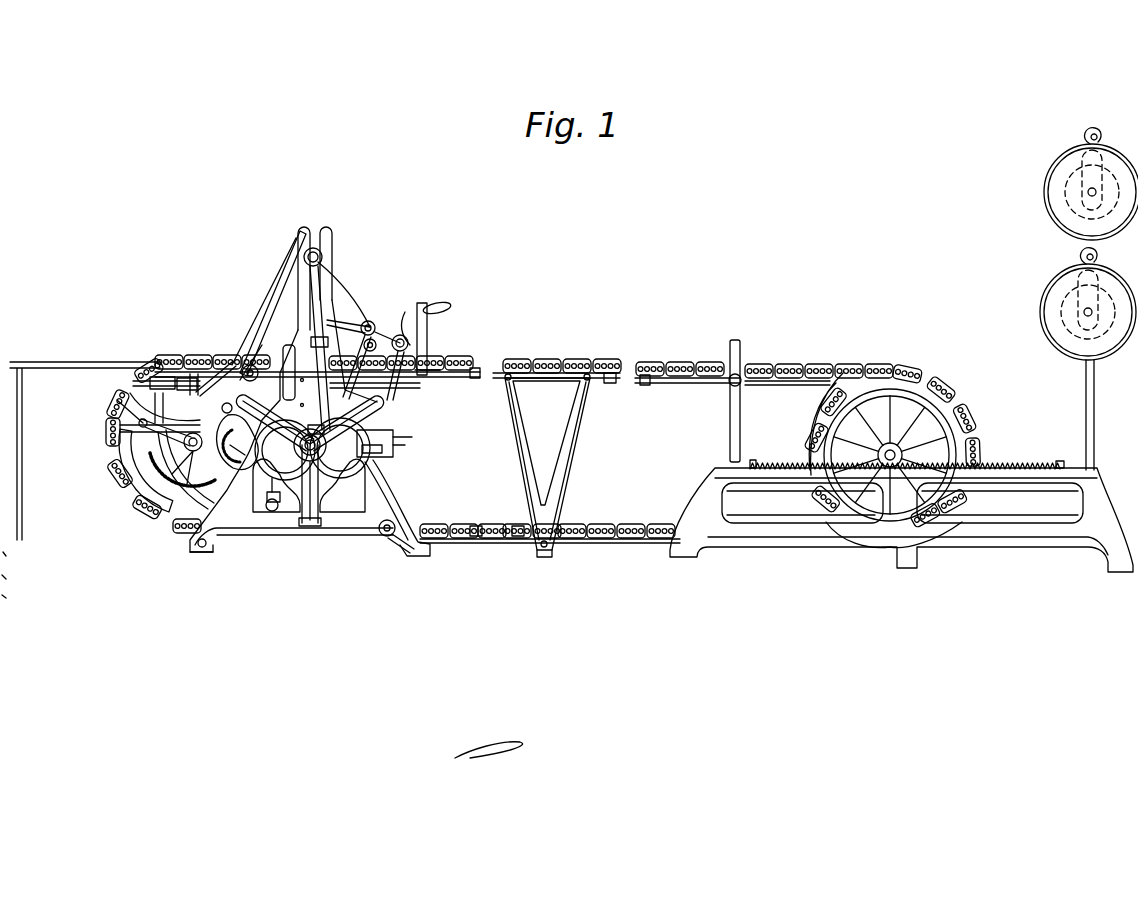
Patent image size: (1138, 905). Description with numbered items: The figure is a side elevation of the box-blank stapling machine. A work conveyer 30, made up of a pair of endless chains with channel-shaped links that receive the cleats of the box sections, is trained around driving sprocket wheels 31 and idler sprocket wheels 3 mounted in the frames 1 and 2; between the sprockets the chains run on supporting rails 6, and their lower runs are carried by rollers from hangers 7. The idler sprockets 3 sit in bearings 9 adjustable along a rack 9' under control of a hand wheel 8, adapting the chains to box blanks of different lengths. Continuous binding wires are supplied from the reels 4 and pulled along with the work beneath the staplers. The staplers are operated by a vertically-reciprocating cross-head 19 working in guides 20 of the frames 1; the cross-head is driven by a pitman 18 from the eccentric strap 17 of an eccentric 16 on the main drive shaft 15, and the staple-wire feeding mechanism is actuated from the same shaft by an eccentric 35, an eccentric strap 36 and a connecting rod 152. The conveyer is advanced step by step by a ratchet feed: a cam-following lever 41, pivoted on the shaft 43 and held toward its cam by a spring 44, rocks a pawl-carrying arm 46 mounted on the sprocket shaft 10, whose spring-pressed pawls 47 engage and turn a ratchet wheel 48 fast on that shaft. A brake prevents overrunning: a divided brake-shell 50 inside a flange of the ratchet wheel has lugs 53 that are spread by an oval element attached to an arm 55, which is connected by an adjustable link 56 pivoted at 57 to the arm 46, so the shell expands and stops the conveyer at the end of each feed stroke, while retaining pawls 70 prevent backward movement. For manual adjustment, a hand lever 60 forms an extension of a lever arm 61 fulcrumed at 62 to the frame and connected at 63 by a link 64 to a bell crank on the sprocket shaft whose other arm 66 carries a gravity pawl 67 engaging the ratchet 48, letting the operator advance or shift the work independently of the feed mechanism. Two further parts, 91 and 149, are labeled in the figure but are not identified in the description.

The frame 1 is at (320, 300).
The frame 2 is at (1030, 540).
The sprocket wheel 3 is at (838, 420).
The reel 4 is at (1046, 195).
The supporting rail 6 is at (480, 372).
The hanger 7 is at (572, 455).
The hand wheel 8 is at (905, 420).
The bearing 9 is at (874, 534).
The rack 9' is at (907, 424).
The sprocket shaft 10 is at (205, 490).
The main drive shaft 15 is at (340, 470).
The eccentric 16 is at (395, 438).
The eccentric strap 17 is at (385, 456).
The pitman 18 is at (335, 320).
The cross-head 19 is at (322, 264).
The guide 20 is at (302, 232).
The work conveyer 30 is at (592, 376).
The sprocket wheel 31 is at (140, 512).
The eccentric 35 is at (332, 480).
The eccentric strap 36 is at (305, 475).
The cam-following lever 41 is at (275, 512).
The shaft 43 is at (262, 500).
The spring 44 is at (283, 392).
The pawl-carrying arm 46 is at (200, 362).
The spring-pressed pawl 47 is at (165, 366).
The ratchet wheel 48 is at (185, 495).
The divided brake-shell 50 is at (157, 492).
The lug 53 is at (112, 422).
The arm 55 is at (155, 392).
The adjustable link 56 is at (140, 370).
The pivot 57 is at (183, 360).
The hand lever 60 is at (430, 336).
The lever arm 61 is at (366, 320).
The fulcrum 62 is at (284, 305).
The connection 63 is at (273, 318).
The link 64 is at (250, 350).
The arm of bell crank lever 66 is at (120, 496).
The gravity pawl 67 is at (140, 442).
The retaining pawl 70 is at (235, 468).
The lever 91 is at (233, 352).
The lever pivot 149 is at (402, 338).
The connecting rod 152 is at (372, 382).